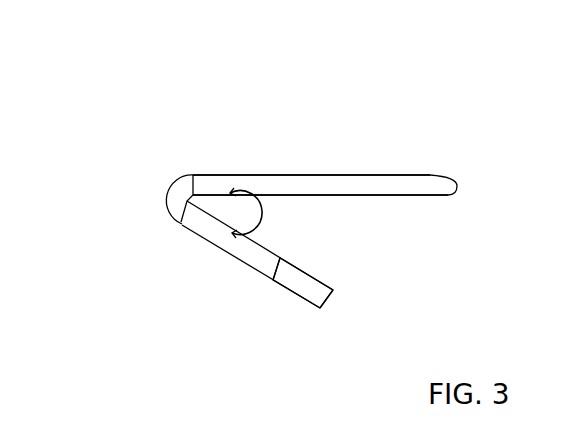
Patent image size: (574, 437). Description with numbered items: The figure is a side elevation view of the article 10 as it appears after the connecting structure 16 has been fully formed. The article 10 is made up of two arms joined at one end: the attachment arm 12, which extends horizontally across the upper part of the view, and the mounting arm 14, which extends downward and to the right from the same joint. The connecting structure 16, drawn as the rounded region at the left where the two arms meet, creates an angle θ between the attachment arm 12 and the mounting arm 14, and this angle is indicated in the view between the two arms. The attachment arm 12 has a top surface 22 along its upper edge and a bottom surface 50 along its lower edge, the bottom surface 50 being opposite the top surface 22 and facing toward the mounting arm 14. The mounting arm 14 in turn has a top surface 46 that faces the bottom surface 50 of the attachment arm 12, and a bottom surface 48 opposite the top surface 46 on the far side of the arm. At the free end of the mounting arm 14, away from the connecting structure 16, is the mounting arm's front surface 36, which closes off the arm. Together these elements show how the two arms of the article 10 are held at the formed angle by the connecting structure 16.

The article 10 is at (178, 95).
The attachment arm 12 is at (323, 160).
The top surface 22 is at (370, 172).
The bottom surface 50 is at (368, 196).
The connecting structure 16 is at (167, 202).
The mounting arm 14 is at (237, 270).
The top surface 46 is at (315, 277).
The front surface 36 is at (330, 293).
The bottom surface 48 is at (288, 296).